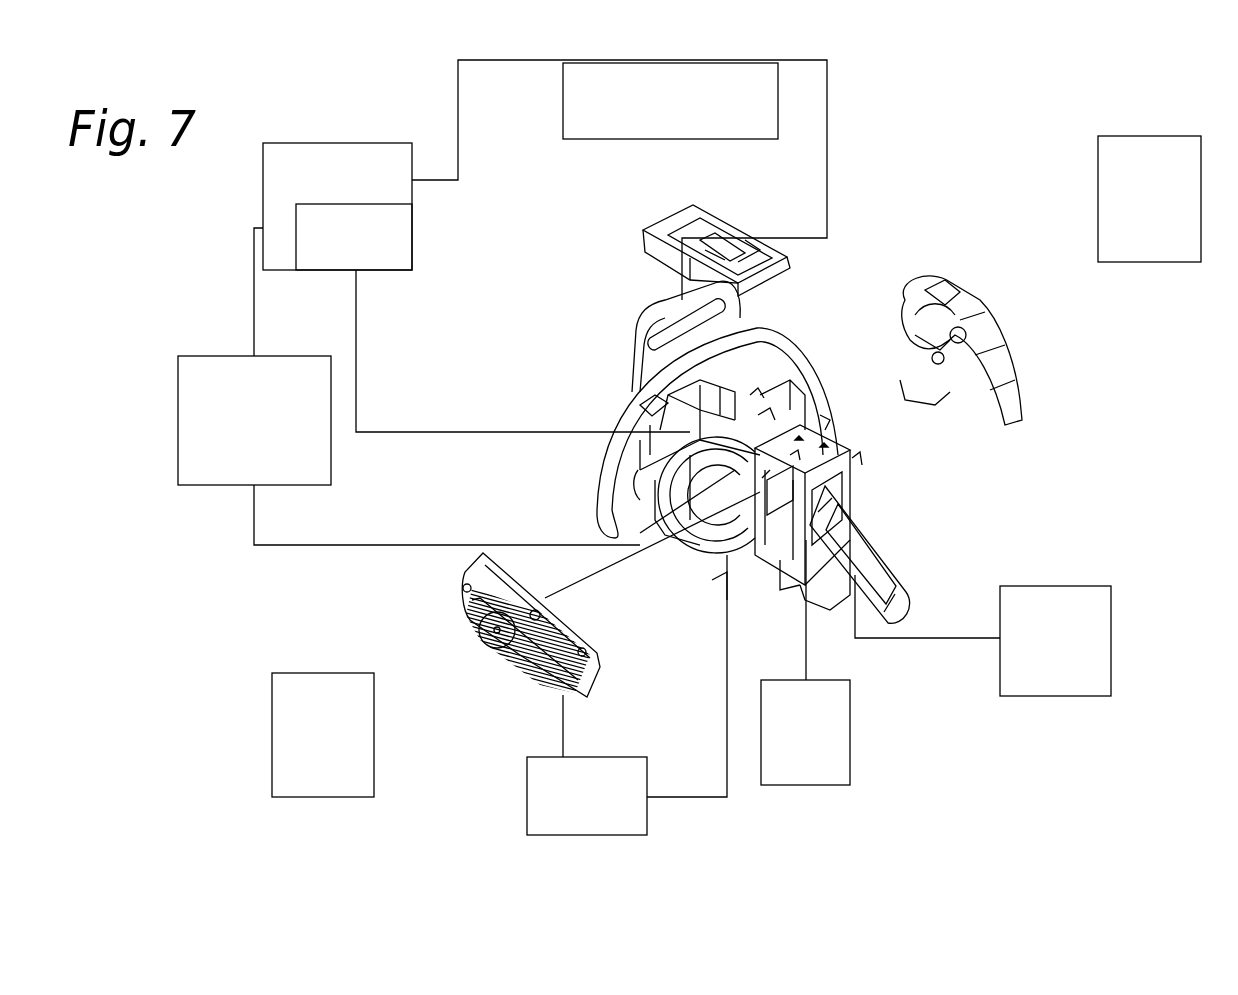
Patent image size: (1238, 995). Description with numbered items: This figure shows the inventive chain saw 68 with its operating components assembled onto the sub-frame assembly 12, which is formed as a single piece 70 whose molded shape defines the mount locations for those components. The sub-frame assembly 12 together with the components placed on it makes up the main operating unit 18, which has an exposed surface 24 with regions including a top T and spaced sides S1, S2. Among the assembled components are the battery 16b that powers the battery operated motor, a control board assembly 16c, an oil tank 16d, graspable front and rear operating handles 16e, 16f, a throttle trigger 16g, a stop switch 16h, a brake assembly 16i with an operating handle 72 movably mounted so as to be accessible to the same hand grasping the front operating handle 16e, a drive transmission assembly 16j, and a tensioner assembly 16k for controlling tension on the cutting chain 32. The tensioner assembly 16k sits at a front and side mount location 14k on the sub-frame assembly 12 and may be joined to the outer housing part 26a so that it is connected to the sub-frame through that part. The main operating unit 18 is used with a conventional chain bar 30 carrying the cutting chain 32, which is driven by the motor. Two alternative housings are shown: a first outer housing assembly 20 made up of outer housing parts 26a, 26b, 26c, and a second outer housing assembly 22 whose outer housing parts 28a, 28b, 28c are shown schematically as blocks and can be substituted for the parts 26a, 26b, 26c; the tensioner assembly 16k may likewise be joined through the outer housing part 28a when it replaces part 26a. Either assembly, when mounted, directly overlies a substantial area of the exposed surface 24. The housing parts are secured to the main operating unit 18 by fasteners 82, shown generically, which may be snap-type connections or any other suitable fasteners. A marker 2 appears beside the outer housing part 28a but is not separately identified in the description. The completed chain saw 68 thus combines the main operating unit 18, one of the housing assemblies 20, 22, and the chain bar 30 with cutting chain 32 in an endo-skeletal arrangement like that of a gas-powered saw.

The chain saw 2 is at (1168, 164).
The sub-frame assembly 12 is at (700, 560).
The front and side mount location 14k is at (825, 415).
The battery 16b is at (862, 457).
The control board assembly 16c is at (692, 423).
The oil tank 16d is at (640, 482).
The front operating handle 16e is at (756, 395).
The rear operating handle 16f is at (875, 558).
The throttle trigger 16g is at (1070, 681).
The stop switch 16h is at (820, 776).
The brake assembly 16i is at (765, 410).
The drive transmission assembly 16j is at (269, 473).
The tensioner assembly 16k is at (938, 372).
The main operating unit 18 is at (718, 585).
The first outer housing assembly 20 is at (779, 464).
The second outer housing assembly 22 is at (500, 456).
The exposed surface 24 is at (805, 448).
The outer housing part 26a is at (985, 305).
The outer housing part 26b is at (538, 702).
The outer housing part 26c is at (712, 207).
The outer housing part 28a is at (1135, 253).
The outer housing part 28b is at (286, 812).
The outer housing part 28c is at (656, 128).
The chain bar 30 is at (367, 253).
The cutting chain 32 is at (386, 191).
The chain saw 68 is at (882, 224).
The single piece 70 is at (702, 540).
The operating handle 72 is at (655, 312).
The fasteners 82 is at (575, 828).
The side S1 is at (795, 452).
The side S2 is at (640, 533).
The top T is at (762, 470).